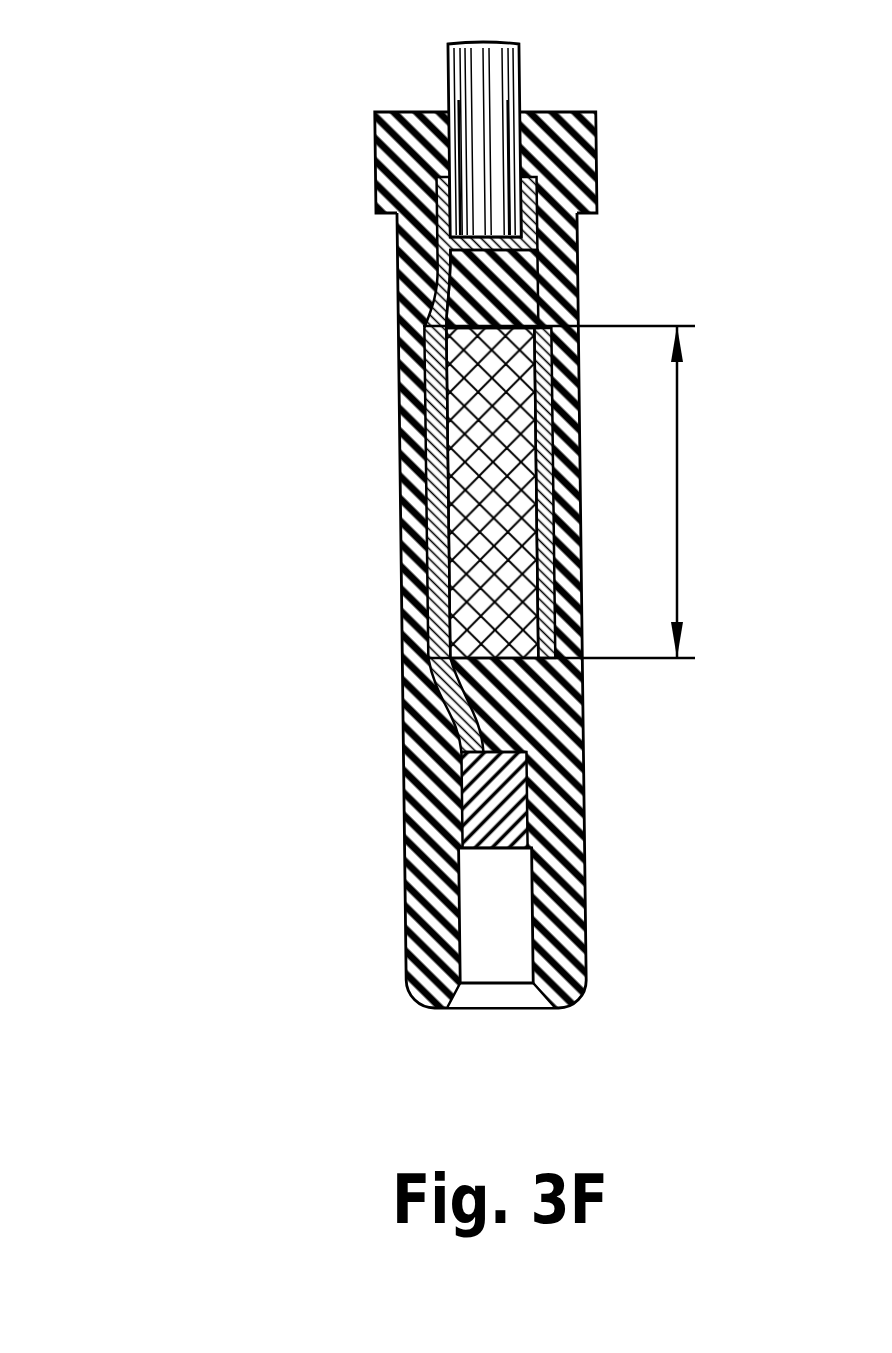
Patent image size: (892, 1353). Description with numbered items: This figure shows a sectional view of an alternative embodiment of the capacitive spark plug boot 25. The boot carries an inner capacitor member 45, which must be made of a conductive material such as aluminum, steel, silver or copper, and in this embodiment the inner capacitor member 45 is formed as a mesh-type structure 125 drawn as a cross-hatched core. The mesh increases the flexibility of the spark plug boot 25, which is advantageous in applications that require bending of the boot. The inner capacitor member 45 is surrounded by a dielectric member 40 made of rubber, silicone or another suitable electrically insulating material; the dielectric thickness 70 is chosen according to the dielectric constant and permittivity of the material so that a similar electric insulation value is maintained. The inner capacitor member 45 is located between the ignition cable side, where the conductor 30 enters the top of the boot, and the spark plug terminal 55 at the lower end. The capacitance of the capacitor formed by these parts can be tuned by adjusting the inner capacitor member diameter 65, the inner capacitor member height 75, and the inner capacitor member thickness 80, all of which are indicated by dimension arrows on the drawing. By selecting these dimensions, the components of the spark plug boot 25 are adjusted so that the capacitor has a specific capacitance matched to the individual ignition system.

The spark plug boot 25 is at (422, 536).
The lead wire 30 is at (460, 95).
The dielectric member 40 is at (577, 162).
The inner capacitor member 45 is at (397, 642).
The spark plug terminal 55 is at (487, 830).
The inner capacitor member diameter 65 is at (623, 375).
The dielectric thickness 70 is at (498, 526).
The inner capacitor member height 75 is at (682, 515).
The inner capacitor member thickness 80 is at (510, 451).
The mesh-type structure 125 is at (498, 567).